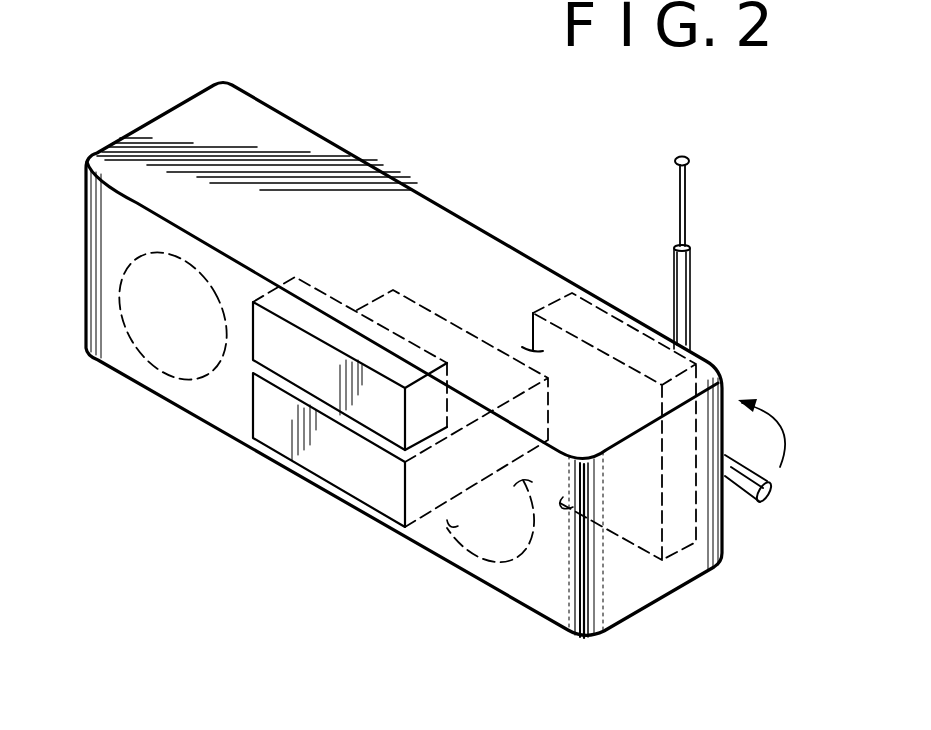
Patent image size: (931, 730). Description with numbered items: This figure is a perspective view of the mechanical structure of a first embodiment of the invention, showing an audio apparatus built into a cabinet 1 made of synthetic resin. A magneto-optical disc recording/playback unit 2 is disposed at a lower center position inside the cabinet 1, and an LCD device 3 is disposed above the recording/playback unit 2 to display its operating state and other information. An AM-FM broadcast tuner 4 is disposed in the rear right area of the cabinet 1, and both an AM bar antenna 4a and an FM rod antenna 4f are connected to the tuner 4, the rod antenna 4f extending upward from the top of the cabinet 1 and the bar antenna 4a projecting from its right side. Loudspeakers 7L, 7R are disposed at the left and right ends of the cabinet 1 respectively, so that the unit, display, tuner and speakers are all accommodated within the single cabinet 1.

The cabinet 1 is at (490, 228).
The magneto-optical disc recording/playback unit 2 is at (320, 465).
The LCD device 3 is at (272, 360).
The AM-FM broadcast tuner 4 is at (680, 543).
The AM bar antenna 4a is at (770, 503).
The FM rod antenna 4f is at (687, 208).
The loudspeaker 7L is at (164, 369).
The loudspeaker 7R is at (483, 550).